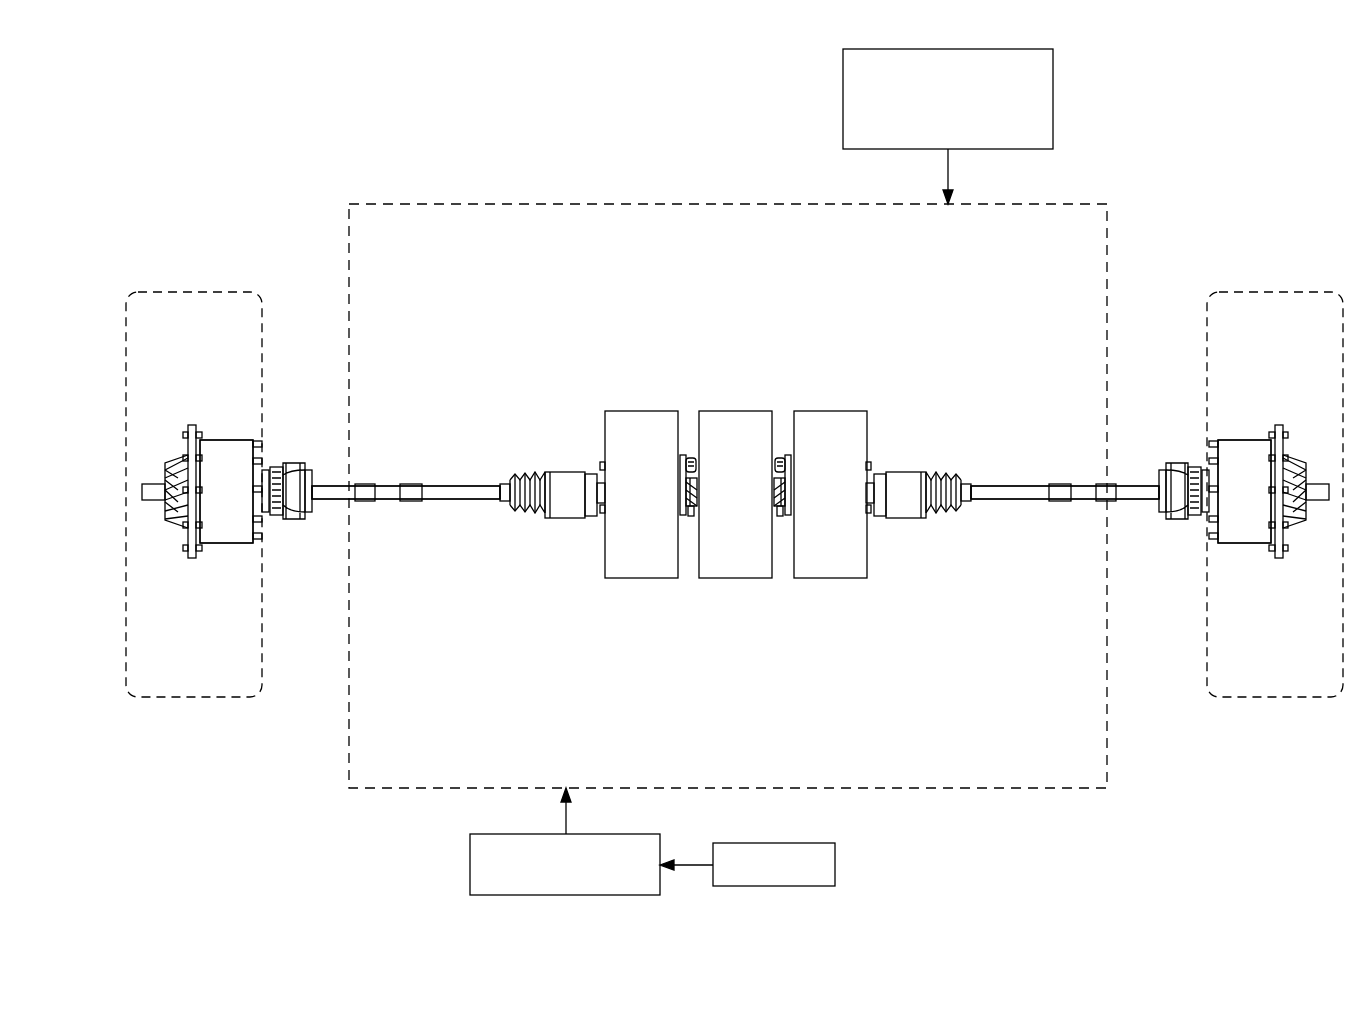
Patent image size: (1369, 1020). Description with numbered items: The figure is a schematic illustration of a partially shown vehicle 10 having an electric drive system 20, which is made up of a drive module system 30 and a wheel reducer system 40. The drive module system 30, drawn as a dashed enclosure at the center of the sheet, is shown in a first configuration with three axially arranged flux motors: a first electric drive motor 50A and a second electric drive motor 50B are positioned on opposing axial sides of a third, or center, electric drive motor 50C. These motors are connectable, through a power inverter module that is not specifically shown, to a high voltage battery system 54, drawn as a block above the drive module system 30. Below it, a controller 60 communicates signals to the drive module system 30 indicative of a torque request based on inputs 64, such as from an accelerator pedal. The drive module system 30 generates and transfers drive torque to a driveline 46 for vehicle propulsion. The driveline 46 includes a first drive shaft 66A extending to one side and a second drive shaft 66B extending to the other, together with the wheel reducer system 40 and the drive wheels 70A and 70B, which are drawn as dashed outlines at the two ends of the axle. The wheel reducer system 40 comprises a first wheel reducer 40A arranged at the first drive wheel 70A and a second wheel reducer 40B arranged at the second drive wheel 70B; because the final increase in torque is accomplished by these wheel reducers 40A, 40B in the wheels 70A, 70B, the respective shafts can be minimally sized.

The vehicle 10 is at (1230, 88).
The electric drive system 20 is at (276, 116).
The drive module system 30 is at (726, 204).
The wheel reducer system 40 is at (229, 515).
The first wheel reducer 40A is at (236, 455).
The second wheel reducer 40B is at (1247, 455).
The driveline 46 is at (1137, 336).
The first electric drive motor 50A is at (641, 411).
The second electric drive motor 50B is at (838, 411).
The third electric drive motor 50C is at (738, 411).
The high voltage battery system 54 is at (1053, 95).
The controller 60 is at (470, 855).
The inputs 64 is at (835, 866).
The first drive shaft 66A is at (461, 487).
The second drive shaft 66B is at (1003, 487).
The first drive wheel 70A is at (195, 292).
The second drive wheel 70B is at (1270, 292).